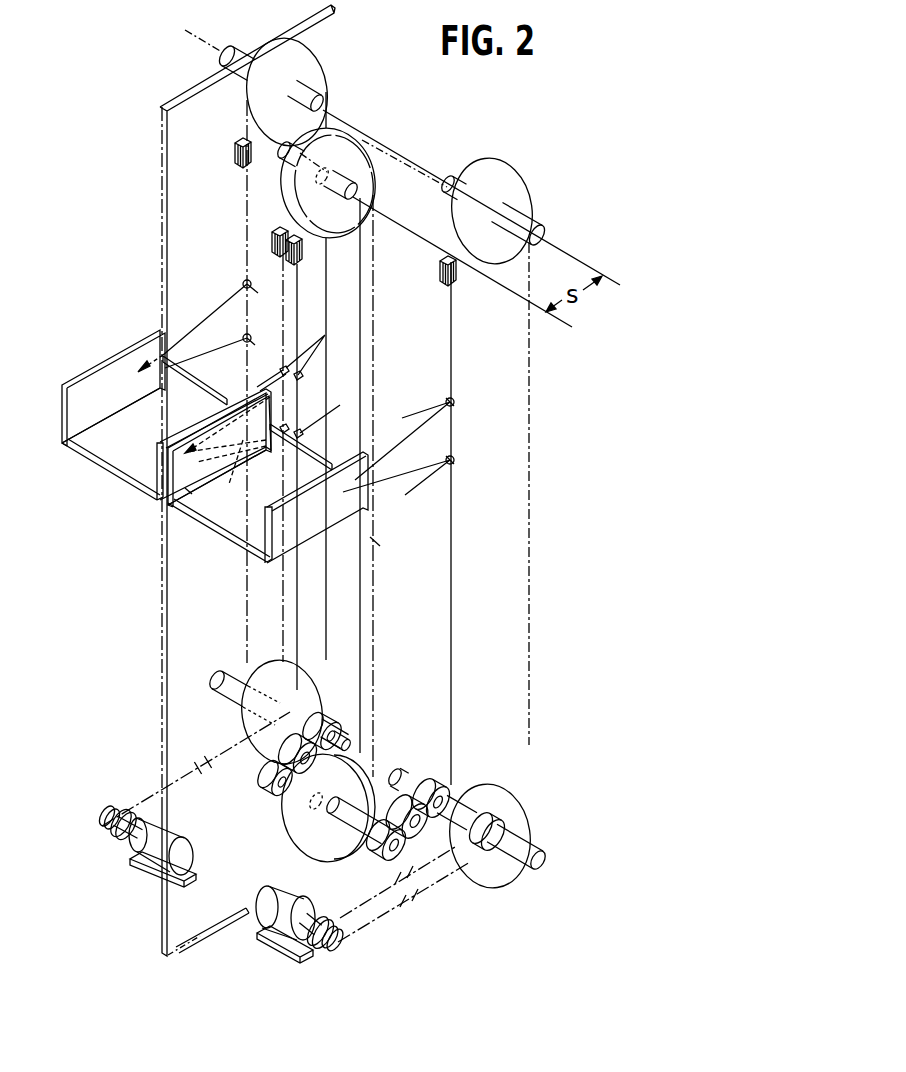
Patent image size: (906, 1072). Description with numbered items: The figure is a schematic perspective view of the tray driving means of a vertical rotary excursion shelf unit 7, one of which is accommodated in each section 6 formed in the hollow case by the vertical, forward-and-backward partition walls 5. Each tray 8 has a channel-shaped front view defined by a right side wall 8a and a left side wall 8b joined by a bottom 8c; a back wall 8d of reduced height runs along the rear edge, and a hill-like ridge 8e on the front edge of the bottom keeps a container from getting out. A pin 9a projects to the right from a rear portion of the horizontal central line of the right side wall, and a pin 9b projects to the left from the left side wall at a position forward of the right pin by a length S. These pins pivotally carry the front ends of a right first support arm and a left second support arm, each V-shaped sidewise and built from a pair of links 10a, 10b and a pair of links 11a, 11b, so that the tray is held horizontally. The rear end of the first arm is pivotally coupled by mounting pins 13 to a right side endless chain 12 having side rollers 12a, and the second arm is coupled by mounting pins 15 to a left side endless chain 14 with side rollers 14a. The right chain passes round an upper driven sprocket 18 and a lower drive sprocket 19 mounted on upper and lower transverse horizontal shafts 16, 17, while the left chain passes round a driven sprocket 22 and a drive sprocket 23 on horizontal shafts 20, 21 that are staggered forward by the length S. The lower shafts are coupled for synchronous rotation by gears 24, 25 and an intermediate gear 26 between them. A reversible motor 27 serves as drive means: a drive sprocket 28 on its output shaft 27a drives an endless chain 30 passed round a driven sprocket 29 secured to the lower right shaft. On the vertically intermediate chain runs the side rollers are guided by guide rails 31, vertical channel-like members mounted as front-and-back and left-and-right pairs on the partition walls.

The partition walls 5 is at (170, 947).
The sections 6 is at (183, 898).
The vertical rotary excursion shelf unit 7 is at (548, 169).
The tray 8 is at (199, 455).
The right side wall 8a is at (183, 425).
The left side wall 8b is at (100, 385).
The bottom 8c is at (108, 453).
The back wall 8d is at (212, 372).
The hill-like ridge 8e is at (123, 472).
The pin 9a is at (370, 537).
The pin 9b is at (185, 488).
The link 10a is at (218, 300).
The link 10b is at (195, 360).
The link 11a is at (276, 365).
The link 11b is at (233, 458).
The endless chain 12 is at (245, 187).
The side rollers 12a is at (453, 400).
The mounting pins 13 is at (455, 407).
The endless chain 14 is at (362, 633).
The side rollers 14a is at (303, 437).
The mounting pins 15 is at (340, 405).
The horizontal shaft 16 is at (233, 47).
The horizontal shaft 17 is at (222, 676).
The upper driven sprocket 18 is at (322, 52).
The lower drive sprocket 19 is at (247, 720).
The horizontal shaft 20 is at (284, 170).
The horizontal shaft 21 is at (350, 838).
The driven sprocket 22 is at (332, 128).
The drive sprocket 23 is at (297, 838).
The gear 24 is at (320, 718).
The gear 25 is at (268, 786).
The intermediate gear 26 is at (283, 760).
The reversible motor 27 is at (140, 856).
The output shaft 27a is at (106, 822).
The drive sprocket 28 is at (127, 812).
The driven sprocket 29 is at (487, 813).
The endless chain 30 is at (193, 795).
The guide rails 31 is at (303, 255).